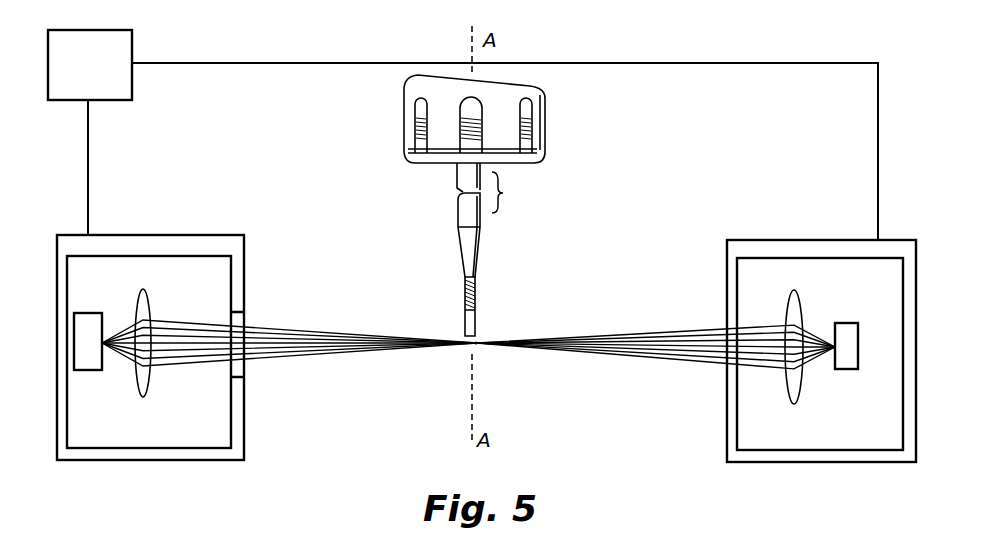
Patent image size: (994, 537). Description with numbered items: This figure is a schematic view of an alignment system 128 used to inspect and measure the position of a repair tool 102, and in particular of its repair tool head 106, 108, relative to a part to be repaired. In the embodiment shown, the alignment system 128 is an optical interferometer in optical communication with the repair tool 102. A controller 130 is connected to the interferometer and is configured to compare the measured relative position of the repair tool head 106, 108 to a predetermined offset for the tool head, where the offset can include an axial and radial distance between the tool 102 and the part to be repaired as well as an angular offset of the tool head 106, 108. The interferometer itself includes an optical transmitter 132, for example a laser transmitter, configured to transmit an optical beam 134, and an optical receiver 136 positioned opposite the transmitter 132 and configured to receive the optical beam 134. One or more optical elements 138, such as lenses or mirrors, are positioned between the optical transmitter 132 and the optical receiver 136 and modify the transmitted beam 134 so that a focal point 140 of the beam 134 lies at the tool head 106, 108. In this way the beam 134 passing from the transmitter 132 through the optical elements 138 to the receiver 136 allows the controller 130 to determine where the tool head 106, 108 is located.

The alignment system 128 is at (233, 35).
The controller 130 is at (104, 77).
The repair tool 102 is at (383, 137).
The repair tool head 106 is at (521, 249).
The repair tool head 108 is at (509, 315).
The optical transmitter 132 is at (90, 364).
The optical beam 134 is at (325, 367).
The optical receiver 136 is at (847, 363).
The optical elements 138 is at (150, 385).
The focal point 140 is at (478, 355).